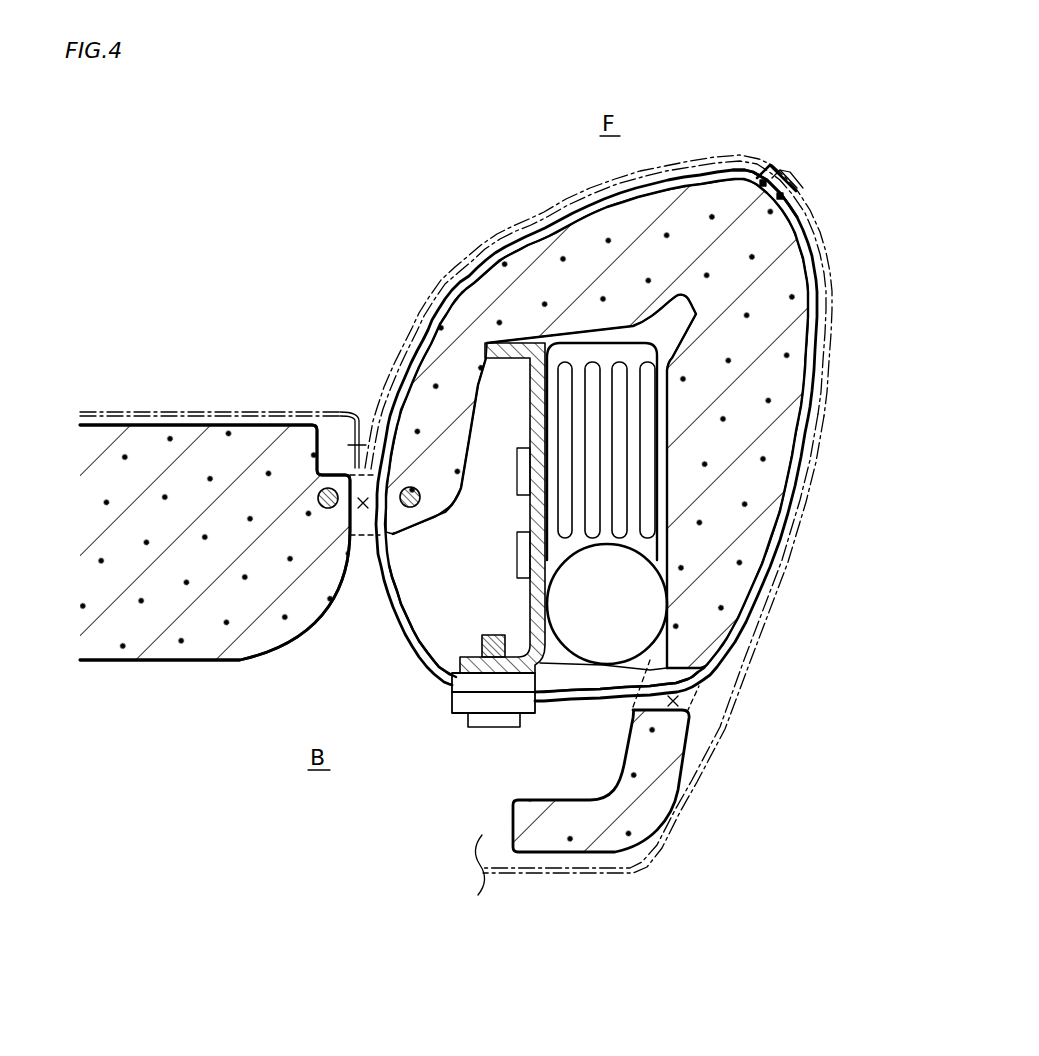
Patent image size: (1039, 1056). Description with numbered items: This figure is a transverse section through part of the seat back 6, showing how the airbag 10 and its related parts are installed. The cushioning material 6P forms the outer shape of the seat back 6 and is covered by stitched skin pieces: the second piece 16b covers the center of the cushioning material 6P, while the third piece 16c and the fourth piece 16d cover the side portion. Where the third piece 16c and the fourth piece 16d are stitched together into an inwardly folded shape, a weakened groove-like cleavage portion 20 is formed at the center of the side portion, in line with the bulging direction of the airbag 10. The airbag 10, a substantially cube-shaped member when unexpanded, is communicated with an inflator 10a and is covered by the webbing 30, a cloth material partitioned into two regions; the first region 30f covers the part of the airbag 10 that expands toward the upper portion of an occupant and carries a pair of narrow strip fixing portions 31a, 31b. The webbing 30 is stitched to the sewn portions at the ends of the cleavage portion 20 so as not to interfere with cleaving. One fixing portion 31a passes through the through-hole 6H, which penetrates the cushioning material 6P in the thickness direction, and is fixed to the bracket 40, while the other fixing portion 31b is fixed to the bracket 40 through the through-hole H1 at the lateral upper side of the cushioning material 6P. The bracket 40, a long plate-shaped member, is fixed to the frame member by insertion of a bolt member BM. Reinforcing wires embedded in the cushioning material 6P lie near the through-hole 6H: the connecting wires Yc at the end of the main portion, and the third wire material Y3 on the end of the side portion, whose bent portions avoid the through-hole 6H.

The cleavage portion 20 is at (793, 160).
The first region 30f is at (806, 208).
The third piece 16c is at (462, 288).
The seat back 6 is at (146, 358).
The cushioning material 6P is at (205, 440).
The second piece 16b is at (252, 412).
The through-hole 6H is at (363, 495).
The fourth piece 16d is at (836, 420).
The connecting wires Yc is at (318, 498).
The third wire material Y3 is at (420, 502).
The webbing 30 is at (800, 490).
The fixing portion 31a is at (387, 617).
The fixing portion 31b is at (600, 700).
The airbag 10 is at (665, 515).
The inflator 10a is at (630, 602).
The bracket 40 is at (505, 703).
The bolt member BM is at (493, 718).
The through-hole H1 is at (680, 701).